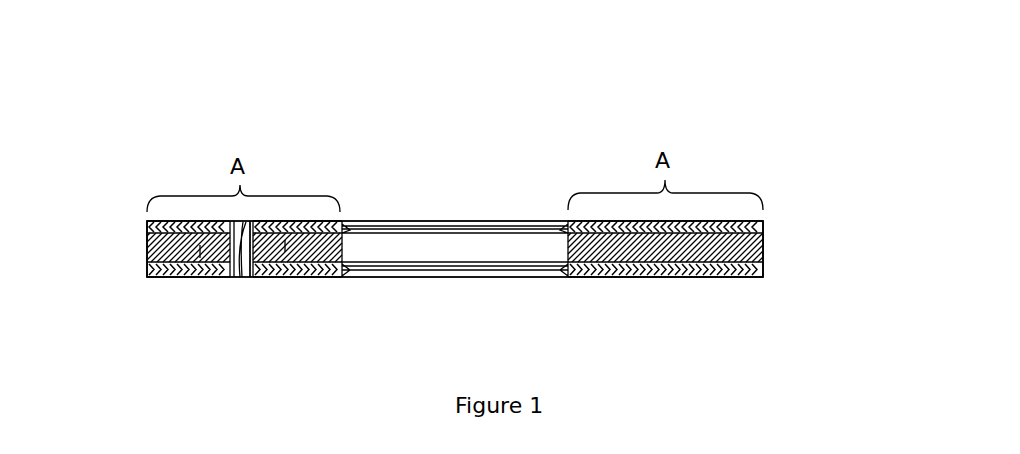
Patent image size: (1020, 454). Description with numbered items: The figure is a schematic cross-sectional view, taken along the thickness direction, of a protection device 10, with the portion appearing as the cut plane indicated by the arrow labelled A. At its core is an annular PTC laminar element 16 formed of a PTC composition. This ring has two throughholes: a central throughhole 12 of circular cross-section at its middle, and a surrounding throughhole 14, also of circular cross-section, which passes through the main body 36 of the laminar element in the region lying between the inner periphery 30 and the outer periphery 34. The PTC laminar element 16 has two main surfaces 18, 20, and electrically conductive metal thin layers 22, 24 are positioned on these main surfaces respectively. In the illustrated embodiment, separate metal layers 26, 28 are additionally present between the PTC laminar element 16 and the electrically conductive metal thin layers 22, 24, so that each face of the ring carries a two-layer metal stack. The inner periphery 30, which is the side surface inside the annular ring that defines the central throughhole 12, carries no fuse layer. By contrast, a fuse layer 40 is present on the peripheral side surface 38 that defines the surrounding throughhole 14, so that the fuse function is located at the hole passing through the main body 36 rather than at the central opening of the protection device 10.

The protection device 10 is at (493, 181).
The central throughhole 12 is at (404, 262).
The surrounding throughhole 14 is at (236, 278).
The PTC laminar element 16 is at (190, 280).
The main surface 18 is at (430, 221).
The main surface 20 is at (147, 252).
The electrically conductive metal thin layer 22 is at (490, 221).
The electrically conductive metal thin layer 24 is at (296, 278).
The metal layer 26 is at (147, 228).
The metal layer 28 is at (365, 278).
The inner periphery 30 is at (386, 221).
The outer periphery 34 is at (147, 244).
The main body 36 is at (291, 222).
The peripheral side surface 38 is at (246, 222).
The fuse layer 40 is at (233, 222).